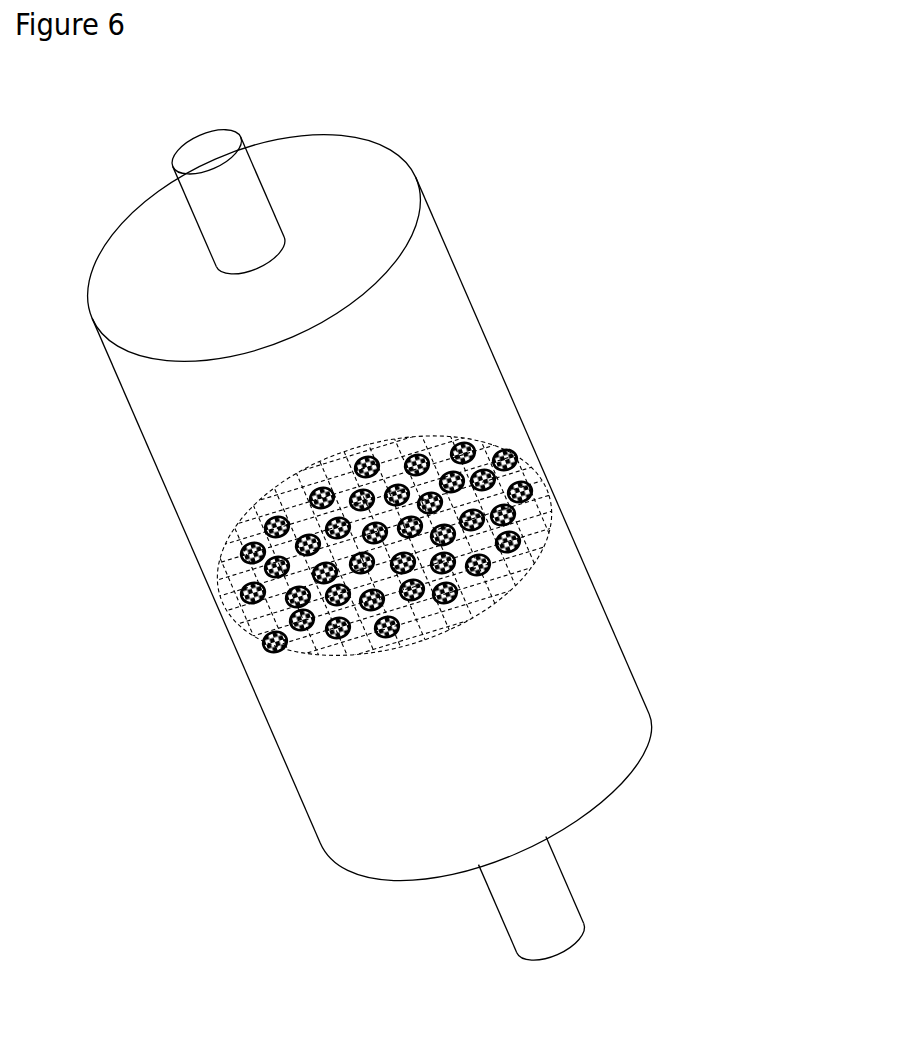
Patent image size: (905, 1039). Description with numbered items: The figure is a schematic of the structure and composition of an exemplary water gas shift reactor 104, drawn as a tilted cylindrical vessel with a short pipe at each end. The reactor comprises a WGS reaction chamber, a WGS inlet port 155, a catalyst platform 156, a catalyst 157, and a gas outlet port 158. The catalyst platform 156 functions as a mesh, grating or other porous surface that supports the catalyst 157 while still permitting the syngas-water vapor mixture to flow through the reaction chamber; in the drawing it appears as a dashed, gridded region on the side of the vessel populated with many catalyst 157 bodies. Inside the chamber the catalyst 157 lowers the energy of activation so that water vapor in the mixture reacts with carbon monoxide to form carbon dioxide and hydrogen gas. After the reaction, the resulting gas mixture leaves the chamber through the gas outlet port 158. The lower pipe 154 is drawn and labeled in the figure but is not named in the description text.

The water gas shift reactor 104 is at (522, 262).
The outlet pipe 154 is at (500, 918).
The WGS inlet port 155 is at (320, 840).
The catalyst platform 156 is at (290, 658).
The catalyst 157 is at (247, 598).
The gas outlet port 158 is at (173, 177).